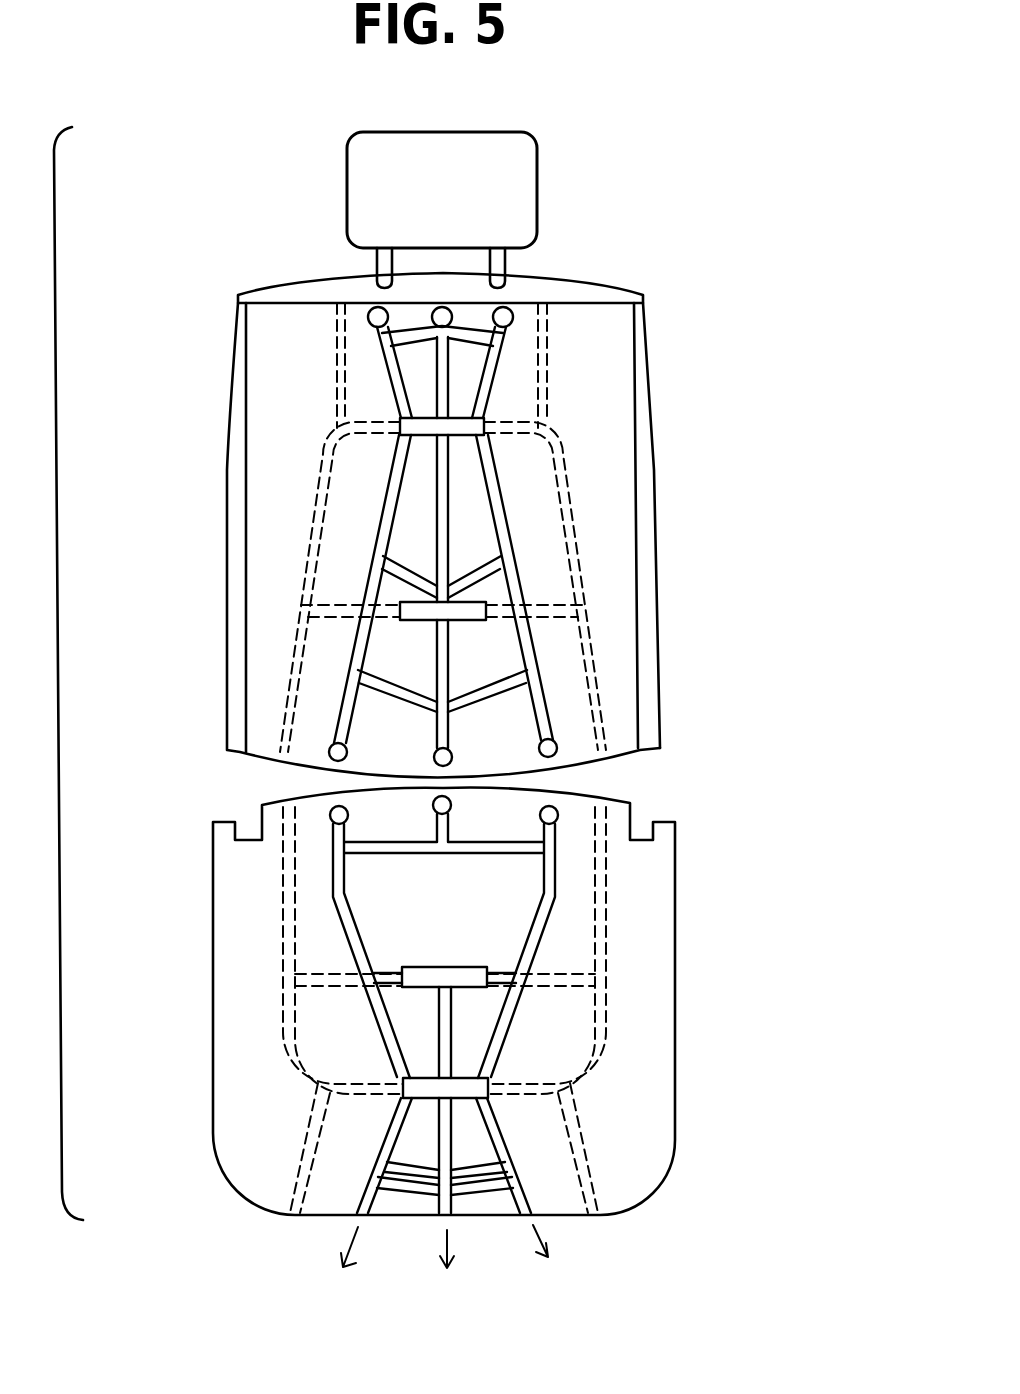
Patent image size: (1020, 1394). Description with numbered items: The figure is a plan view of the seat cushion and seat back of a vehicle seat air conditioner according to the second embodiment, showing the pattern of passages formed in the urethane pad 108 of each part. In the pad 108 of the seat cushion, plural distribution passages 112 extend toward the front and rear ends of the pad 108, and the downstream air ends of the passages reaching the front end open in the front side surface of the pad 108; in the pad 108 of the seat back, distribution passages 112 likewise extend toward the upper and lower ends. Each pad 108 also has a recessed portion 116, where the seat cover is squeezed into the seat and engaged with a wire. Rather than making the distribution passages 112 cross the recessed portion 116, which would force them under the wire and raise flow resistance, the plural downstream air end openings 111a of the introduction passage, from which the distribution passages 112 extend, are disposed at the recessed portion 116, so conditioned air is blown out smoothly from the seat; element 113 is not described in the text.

The urethane pad 108 is at (612, 450).
The downstream air end opening 111a is at (457, 427).
The distribution passage 112 is at (530, 636).
The cross member 113 is at (493, 688).
The recessed portion 116 is at (577, 503).